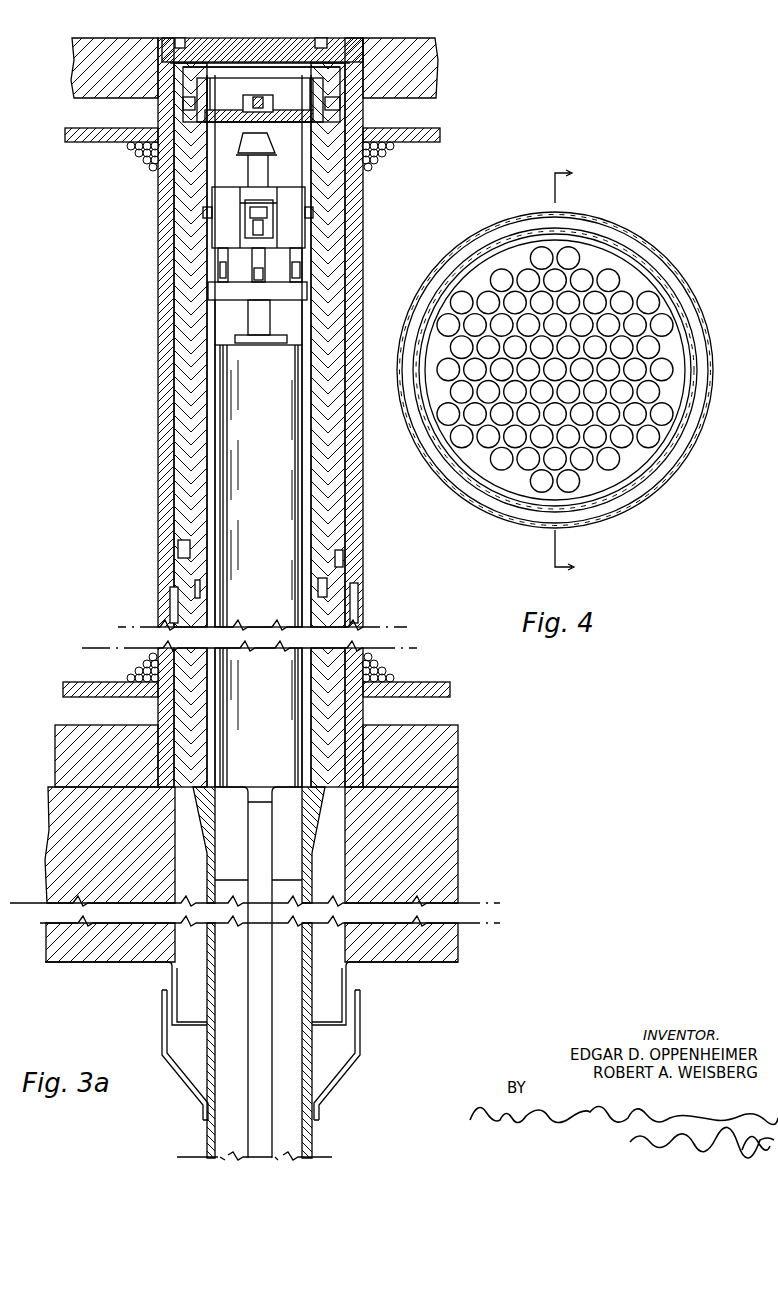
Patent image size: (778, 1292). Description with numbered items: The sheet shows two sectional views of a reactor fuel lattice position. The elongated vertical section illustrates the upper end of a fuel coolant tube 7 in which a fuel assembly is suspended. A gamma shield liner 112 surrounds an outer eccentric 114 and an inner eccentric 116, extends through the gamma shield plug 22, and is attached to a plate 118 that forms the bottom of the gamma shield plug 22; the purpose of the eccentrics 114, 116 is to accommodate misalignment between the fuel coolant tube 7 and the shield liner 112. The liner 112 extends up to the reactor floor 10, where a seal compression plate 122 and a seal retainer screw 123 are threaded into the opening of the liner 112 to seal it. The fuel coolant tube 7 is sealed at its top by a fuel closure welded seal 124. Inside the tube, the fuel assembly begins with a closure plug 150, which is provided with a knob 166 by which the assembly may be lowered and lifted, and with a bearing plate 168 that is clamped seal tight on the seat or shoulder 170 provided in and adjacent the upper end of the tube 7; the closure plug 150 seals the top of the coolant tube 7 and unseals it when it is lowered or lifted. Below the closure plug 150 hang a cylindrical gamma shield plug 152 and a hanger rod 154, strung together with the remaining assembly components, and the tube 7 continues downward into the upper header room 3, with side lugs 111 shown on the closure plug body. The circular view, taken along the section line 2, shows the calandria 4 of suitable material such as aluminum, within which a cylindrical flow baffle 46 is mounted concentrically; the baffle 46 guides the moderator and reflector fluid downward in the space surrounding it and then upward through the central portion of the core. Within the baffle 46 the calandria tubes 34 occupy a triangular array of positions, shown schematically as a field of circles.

In FIG. 3A, the reactor floor 10 is at (390, 44).
In FIG. 3A, the plate 118 is at (458, 760).
In FIG. 3A, the gamma shield plug 22 is at (198, 412).
In FIG. 3A, the gamma shield liner 112 is at (167, 237).
In FIG. 3A, the outer eccentric 114 is at (176, 423).
In FIG. 3A, the inner eccentric 116 is at (189, 436).
In FIG. 3A, the seal compression plate 122 is at (306, 38).
In FIG. 3A, the seal retainer screw 123 is at (172, 40).
In FIG. 3A, the fuel closure welded seal 124 is at (241, 122).
In FIG. 3A, the knob 166 is at (277, 143).
In FIG. 3A, the closure plug 150 is at (293, 187).
In FIG. 3A, the side lugs 111 is at (313, 213).
In FIG. 3A, the bearing plate 168 is at (277, 282).
In FIG. 3A, the seat 170 is at (307, 298).
In FIG. 3A, the cylindrical gamma shield plug 152 is at (295, 345).
In FIG. 3A, the fuel coolant tube 7 is at (215, 504).
In FIG. 3A, the hanger rod 154 is at (288, 826).
In FIG. 3A, the upper header room 3 is at (421, 1058).
In FIG. 4, the calandria 4 is at (635, 232).
In FIG. 4, the cylindrical flow baffle 46 is at (657, 270).
In FIG. 4, the calandria tubes 34 is at (660, 350).
In FIG. 4, the section line 2 is at (571, 367).